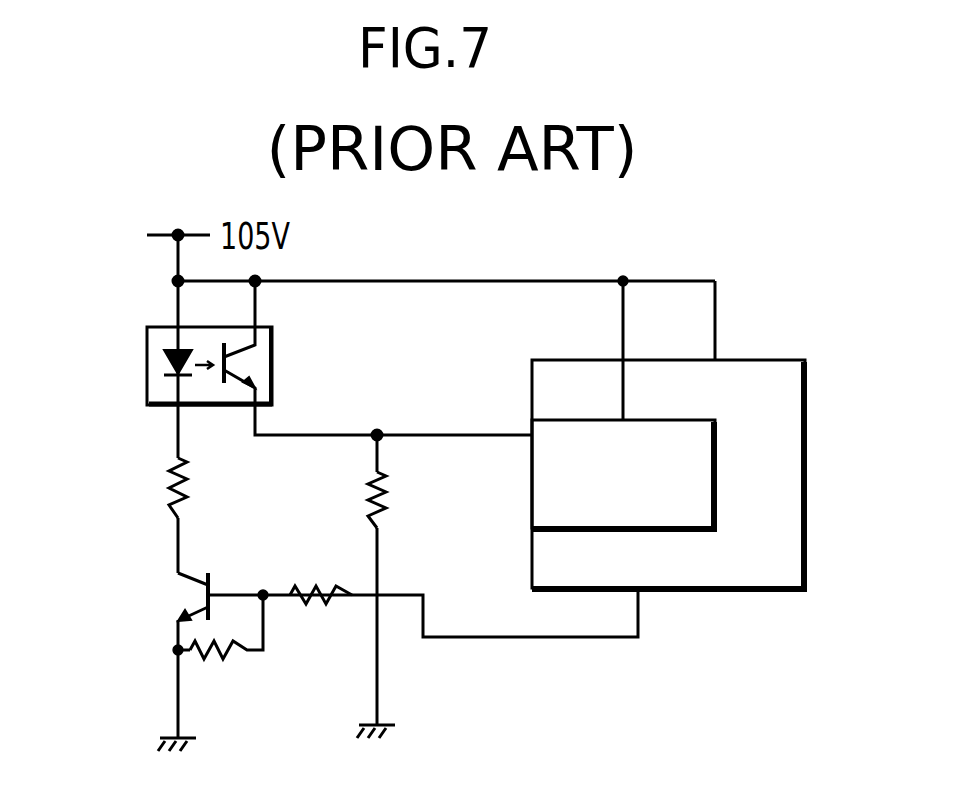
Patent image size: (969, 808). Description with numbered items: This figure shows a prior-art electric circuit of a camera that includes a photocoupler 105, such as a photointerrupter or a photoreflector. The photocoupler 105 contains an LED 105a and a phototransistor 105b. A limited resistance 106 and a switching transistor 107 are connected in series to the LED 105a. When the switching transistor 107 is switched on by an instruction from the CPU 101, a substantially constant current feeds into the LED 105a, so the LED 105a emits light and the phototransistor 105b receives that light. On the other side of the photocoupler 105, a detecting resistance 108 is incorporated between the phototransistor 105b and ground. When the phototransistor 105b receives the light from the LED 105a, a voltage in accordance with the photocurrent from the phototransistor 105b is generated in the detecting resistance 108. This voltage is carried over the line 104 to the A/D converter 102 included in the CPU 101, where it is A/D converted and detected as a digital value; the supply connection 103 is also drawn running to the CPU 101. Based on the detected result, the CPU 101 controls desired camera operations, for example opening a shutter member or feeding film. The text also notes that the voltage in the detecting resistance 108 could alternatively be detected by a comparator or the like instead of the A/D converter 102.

The CPU 101 is at (800, 375).
The A/D converter 102 is at (543, 433).
The power supply line to CPU 103 is at (717, 356).
The signal line to A/D converter 104 is at (621, 358).
The photocoupler 105 is at (201, 405).
The LED 105a is at (160, 362).
The phototransistor 105b is at (272, 355).
The limited resistance 106 is at (170, 488).
The switching transistor 107 is at (180, 598).
The detecting resistance 108 is at (368, 500).